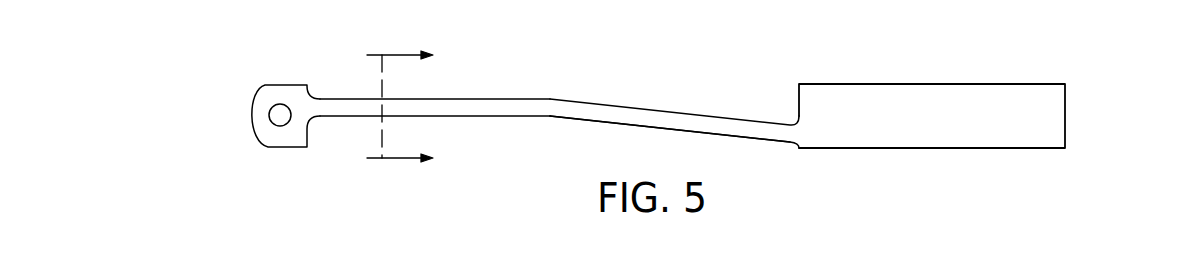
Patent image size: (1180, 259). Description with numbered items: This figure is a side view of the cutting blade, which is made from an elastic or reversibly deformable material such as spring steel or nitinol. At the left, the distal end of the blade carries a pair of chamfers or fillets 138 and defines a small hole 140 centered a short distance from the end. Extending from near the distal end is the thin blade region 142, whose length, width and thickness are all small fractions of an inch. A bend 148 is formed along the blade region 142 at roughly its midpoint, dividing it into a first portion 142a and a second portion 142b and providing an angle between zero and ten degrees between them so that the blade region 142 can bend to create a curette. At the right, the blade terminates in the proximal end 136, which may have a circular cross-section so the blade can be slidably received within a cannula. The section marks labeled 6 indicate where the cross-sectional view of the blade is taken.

The proximal end 136 is at (1077, 80).
The chamfers or fillets 138 is at (255, 95).
The hole 140 is at (277, 120).
The blade region 142 is at (559, 82).
The first portion 142a is at (473, 98).
The second portion 142b is at (652, 112).
The bend 148 is at (547, 117).
The section line 6- 6 is at (392, 106).